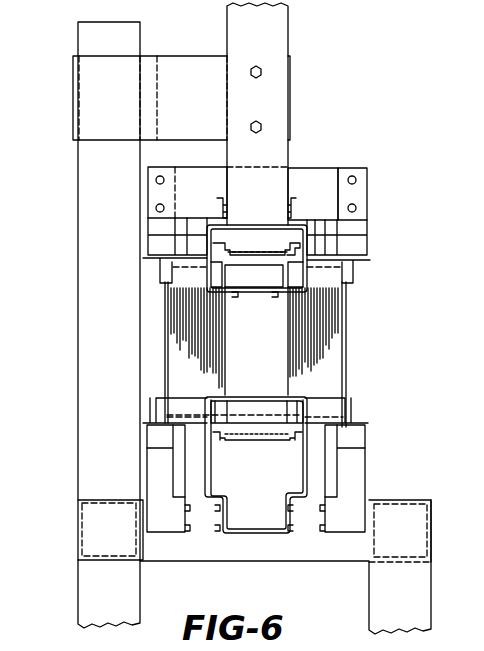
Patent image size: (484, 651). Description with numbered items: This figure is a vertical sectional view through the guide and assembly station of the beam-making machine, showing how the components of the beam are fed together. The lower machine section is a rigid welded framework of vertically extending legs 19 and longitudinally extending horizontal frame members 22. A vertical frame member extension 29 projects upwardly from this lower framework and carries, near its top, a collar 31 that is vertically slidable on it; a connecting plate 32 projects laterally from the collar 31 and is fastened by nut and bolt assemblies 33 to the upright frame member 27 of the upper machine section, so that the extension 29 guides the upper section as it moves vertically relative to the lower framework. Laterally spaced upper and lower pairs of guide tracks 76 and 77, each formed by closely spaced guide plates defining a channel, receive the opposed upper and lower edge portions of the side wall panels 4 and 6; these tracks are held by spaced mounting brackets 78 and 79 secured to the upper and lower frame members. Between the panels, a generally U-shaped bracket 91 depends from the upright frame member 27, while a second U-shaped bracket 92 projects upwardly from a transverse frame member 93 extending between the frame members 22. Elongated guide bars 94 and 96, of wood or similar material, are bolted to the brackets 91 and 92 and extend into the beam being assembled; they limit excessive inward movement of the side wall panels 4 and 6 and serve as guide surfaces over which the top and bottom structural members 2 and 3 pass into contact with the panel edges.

The top structural member 2 is at (267, 261).
The bottom structural member 3 is at (237, 443).
The side wall panel 4 is at (165, 330).
The side wall panel 6 is at (346, 352).
The legs 19 is at (85, 603).
The horizontal frame members 22 is at (82, 535).
The upright frame member 27 is at (283, 33).
The vertical frame member extension 29 is at (78, 283).
The collar 31 is at (73, 97).
The connecting plate 32 is at (192, 44).
The nut and bolt assemblies 33 is at (262, 72).
The upper guide tracks 76 is at (156, 276).
The lower guide tracks 77 is at (152, 415).
The upper mounting brackets 78 is at (360, 227).
The lower mounting brackets 79 is at (165, 228).
The U-shaped bracket 91 is at (299, 232).
The U-shaped bracket 92 is at (233, 390).
The transverse frame member 93 is at (201, 562).
The guide bar 94 is at (248, 289).
The guide bar 96 is at (255, 402).